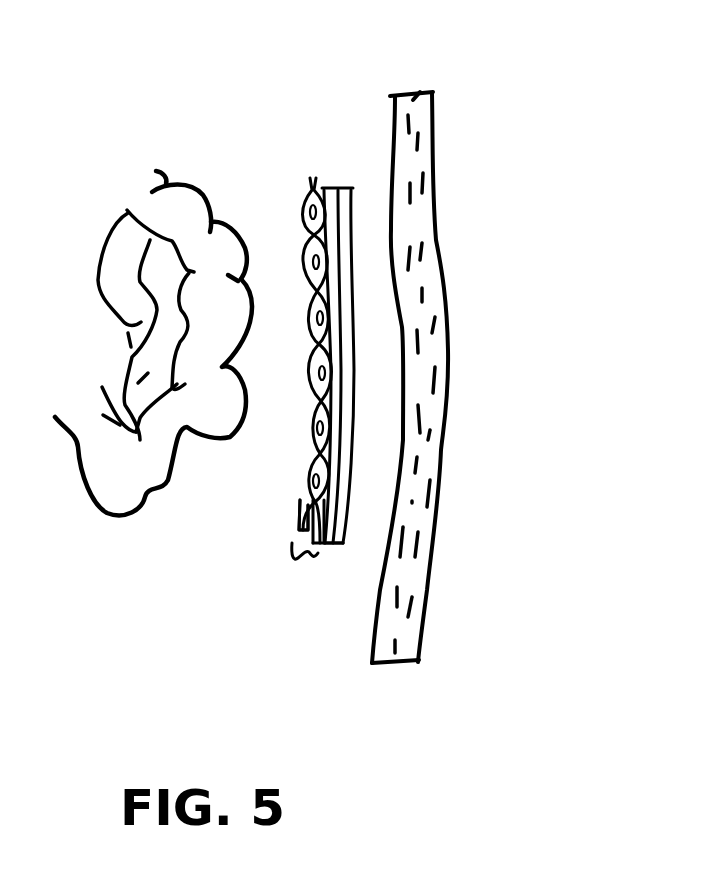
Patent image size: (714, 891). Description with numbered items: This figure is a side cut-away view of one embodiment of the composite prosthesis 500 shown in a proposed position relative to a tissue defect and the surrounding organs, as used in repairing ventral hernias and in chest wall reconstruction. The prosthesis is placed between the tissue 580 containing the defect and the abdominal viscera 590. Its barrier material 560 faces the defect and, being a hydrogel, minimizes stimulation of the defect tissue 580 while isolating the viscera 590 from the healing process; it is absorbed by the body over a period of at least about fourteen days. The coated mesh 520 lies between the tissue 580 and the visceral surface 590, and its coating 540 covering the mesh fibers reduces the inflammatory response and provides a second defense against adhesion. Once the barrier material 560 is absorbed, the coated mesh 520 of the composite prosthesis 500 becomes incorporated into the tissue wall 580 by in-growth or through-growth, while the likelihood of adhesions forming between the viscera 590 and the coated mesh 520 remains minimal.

The composite prosthesis 500 is at (323, 130).
The coated mesh 520 is at (297, 563).
The coating 540 is at (300, 513).
The barrier material 560 is at (333, 545).
The tissue 580 is at (413, 100).
The abdominal viscera 590 is at (249, 412).